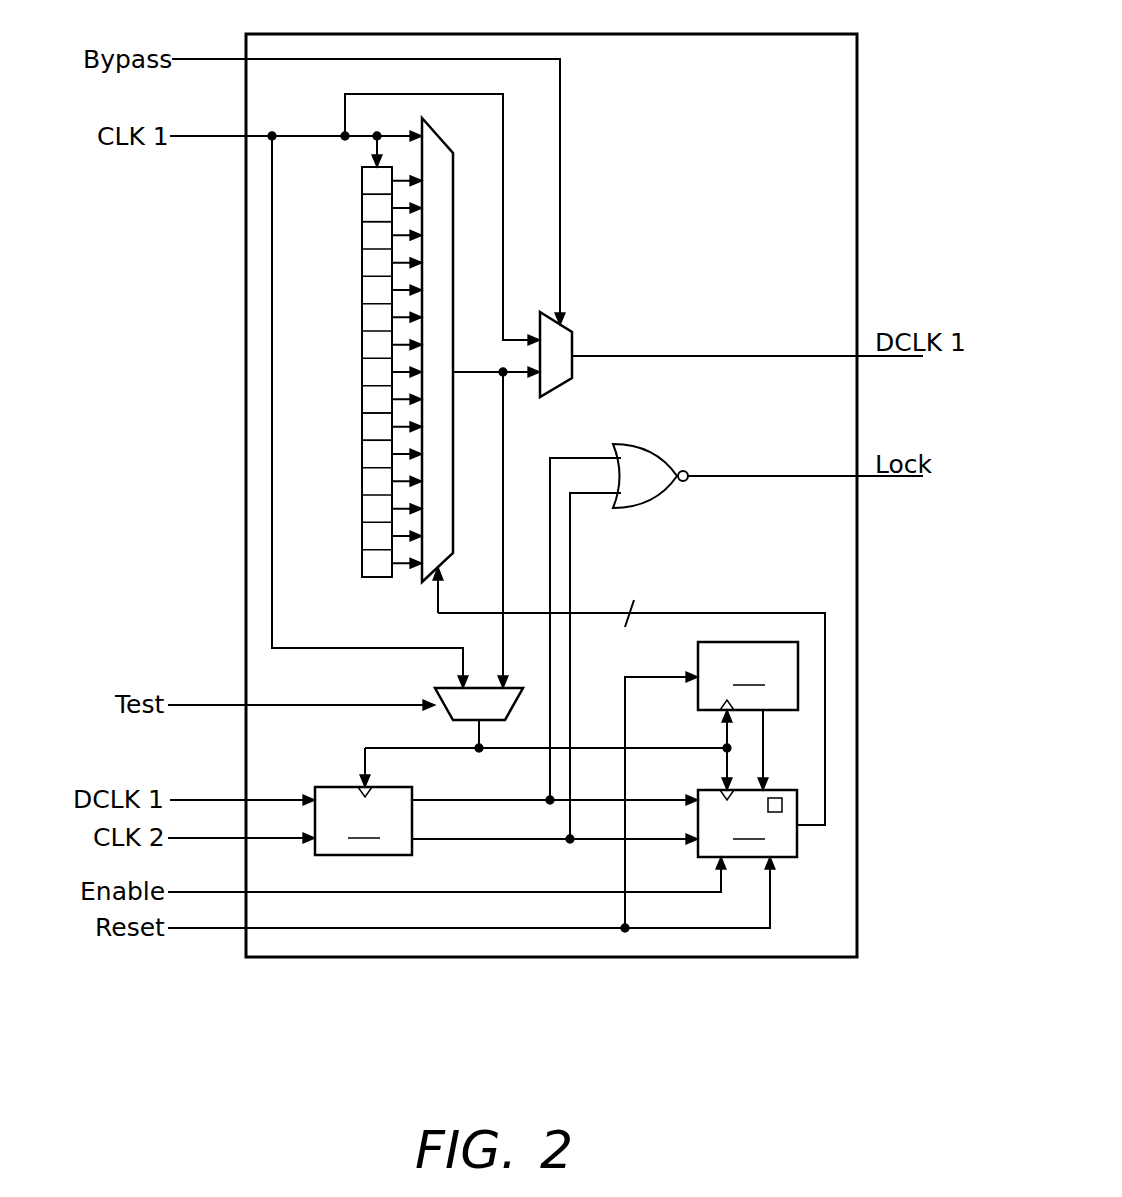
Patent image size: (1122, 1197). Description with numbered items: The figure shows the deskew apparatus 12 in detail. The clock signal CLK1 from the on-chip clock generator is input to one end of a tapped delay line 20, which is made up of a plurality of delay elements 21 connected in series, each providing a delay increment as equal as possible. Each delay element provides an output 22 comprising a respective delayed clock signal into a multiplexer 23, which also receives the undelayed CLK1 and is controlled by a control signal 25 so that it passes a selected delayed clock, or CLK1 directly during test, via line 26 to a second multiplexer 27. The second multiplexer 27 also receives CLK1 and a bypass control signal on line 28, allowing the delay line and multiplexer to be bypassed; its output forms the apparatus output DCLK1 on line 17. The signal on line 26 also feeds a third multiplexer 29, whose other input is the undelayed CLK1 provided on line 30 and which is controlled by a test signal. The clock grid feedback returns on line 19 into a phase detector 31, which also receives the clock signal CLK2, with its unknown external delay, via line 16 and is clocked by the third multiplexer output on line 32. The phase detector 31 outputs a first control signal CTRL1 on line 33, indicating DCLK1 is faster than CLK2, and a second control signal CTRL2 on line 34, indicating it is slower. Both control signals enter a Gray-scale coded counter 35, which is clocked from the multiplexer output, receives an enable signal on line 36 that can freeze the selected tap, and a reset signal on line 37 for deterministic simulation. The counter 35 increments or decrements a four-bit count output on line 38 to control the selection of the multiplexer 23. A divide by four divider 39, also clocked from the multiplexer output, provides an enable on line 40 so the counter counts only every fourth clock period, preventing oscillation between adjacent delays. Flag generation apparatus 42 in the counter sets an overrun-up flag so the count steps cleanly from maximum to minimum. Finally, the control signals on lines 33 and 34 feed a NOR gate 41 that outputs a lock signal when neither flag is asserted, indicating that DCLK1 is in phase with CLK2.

The deskew apparatus 12 is at (772, 34).
The line 16 is at (187, 837).
The output line 17 is at (890, 358).
The line 19 is at (187, 799).
The tapped delay line 20 is at (362, 288).
The delay elements 21 is at (375, 208).
The output 22 is at (408, 205).
The multiplexer 23 is at (453, 455).
The control signal 25 is at (440, 600).
The line 26 is at (470, 372).
The second multiplexer 27 is at (573, 337).
The line 28 is at (560, 147).
The third multiplexer 29 is at (450, 688).
The line 30 is at (270, 378).
The phase detector 31 is at (363, 821).
The line 32 is at (358, 762).
The line 33 is at (513, 800).
The line 34 is at (515, 838).
The counter 35 is at (747, 823).
The line 36 is at (440, 893).
The line 37 is at (773, 912).
The line 38 is at (765, 613).
The divide by four divider 39 is at (748, 676).
The line 40 is at (765, 753).
The NOR gate 41 is at (655, 448).
The flag generation apparatus 42 is at (787, 797).